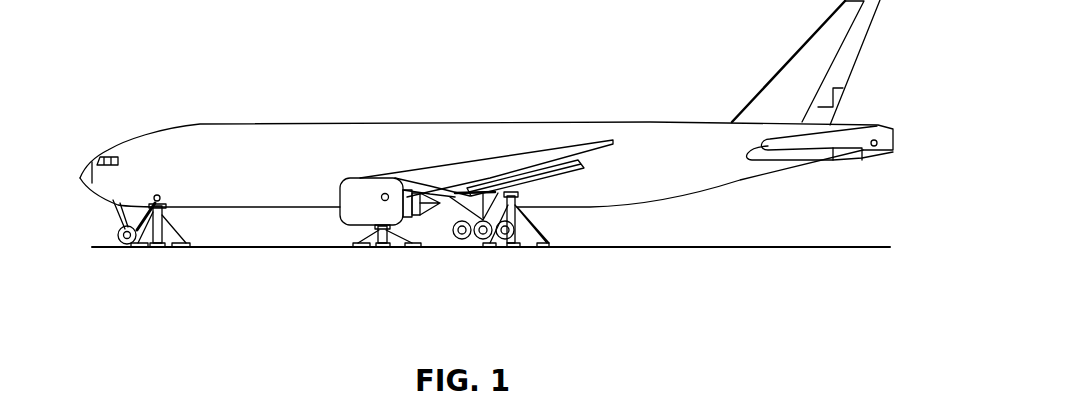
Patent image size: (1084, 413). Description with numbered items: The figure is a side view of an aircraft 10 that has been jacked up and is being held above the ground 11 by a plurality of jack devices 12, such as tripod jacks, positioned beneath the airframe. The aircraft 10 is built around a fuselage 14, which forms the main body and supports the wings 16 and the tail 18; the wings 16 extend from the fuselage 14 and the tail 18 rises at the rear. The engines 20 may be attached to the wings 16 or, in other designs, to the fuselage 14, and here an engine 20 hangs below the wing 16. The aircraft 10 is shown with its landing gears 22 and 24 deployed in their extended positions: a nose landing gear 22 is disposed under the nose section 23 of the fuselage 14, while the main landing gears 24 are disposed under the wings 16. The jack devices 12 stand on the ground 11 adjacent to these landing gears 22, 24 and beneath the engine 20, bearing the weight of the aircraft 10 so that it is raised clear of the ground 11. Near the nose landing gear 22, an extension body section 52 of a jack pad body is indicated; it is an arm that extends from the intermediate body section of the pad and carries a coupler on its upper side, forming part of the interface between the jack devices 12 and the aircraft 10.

The aircraft 10 is at (483, 148).
The ground 11 is at (821, 247).
The jack devices 12 is at (168, 249).
The fuselage 14 is at (253, 192).
The wings 16 is at (497, 155).
The tail 18 is at (843, 88).
The engines 20 is at (358, 221).
The nose landing gear 22 is at (115, 216).
The nose section 23 is at (133, 188).
The main landing gears 24 is at (433, 198).
The extension body section 52 is at (170, 208).